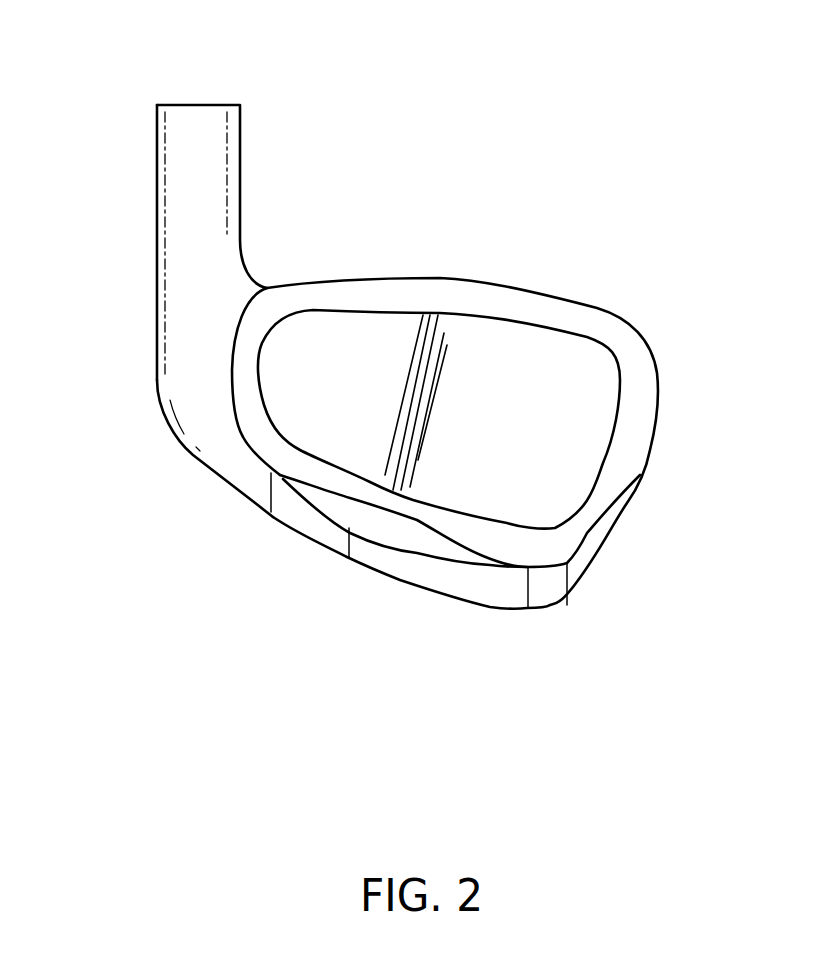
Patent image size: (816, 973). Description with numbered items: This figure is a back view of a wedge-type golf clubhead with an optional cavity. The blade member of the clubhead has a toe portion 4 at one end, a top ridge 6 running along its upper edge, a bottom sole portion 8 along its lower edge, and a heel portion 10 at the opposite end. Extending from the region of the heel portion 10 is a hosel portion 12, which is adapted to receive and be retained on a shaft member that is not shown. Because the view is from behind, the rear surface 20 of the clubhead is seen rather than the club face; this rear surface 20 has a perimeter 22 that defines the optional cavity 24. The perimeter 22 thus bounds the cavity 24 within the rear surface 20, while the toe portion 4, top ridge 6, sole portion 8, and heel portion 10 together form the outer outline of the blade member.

The toe portion 4 is at (635, 412).
The top ridge 6 is at (602, 308).
The bottom sole portion 8 is at (349, 557).
The heel portion 10 is at (193, 455).
The hosel portion 12 is at (193, 102).
The rear surface 20 is at (620, 480).
The perimeter 22 is at (573, 537).
The cavity 24 is at (388, 333).